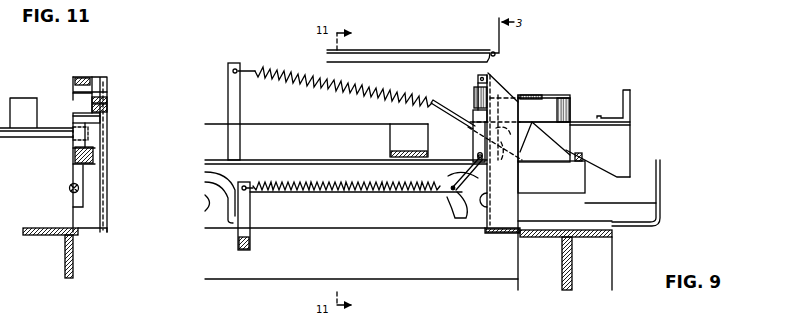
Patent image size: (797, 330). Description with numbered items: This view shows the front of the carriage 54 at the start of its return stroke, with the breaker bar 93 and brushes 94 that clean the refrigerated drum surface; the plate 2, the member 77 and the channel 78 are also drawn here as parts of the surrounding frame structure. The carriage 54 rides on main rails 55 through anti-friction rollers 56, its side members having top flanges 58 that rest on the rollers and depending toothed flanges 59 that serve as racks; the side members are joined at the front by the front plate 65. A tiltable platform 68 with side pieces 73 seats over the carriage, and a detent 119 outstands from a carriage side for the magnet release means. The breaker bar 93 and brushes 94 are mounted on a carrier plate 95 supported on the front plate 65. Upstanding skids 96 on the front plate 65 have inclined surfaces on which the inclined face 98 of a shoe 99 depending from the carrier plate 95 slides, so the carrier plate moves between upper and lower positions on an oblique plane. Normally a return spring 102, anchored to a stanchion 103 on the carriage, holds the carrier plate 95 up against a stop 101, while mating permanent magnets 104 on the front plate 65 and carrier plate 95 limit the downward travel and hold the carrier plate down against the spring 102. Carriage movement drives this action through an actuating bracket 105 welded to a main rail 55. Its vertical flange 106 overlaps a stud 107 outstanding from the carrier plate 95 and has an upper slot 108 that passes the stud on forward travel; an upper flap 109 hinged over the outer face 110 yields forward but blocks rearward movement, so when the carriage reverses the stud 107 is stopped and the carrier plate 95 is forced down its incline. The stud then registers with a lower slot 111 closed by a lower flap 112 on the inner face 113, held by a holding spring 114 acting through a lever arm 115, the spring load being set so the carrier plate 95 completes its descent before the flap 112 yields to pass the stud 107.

In FIG. 9, the top plate 2 is at (404, 62).
In FIG. 9, the carriage 54 is at (295, 194).
In FIG. 11, the main rails 55 is at (74, 252).
In FIG. 9, the main rails 55 is at (212, 281).
In FIG. 9, the anti-friction rollers 56 is at (452, 200).
In FIG. 9, the top flanges 58 is at (258, 160).
In FIG. 9, the vertical flanges 59 is at (290, 169).
In FIG. 9, the front plate 65 is at (549, 164).
In FIG. 9, the tiltable platform 68 is at (263, 121).
In FIG. 9, the side pieces 73 is at (338, 150).
In FIG. 9, the support post 77 is at (574, 270).
In FIG. 9, the channel 78 is at (660, 196).
In FIG. 9, the breaker bar 93 is at (632, 104).
In FIG. 9, the brushes 94 is at (553, 110).
In FIG. 9, the carrier plate 95 is at (585, 121).
In FIG. 9, the skids 96 is at (548, 147).
In FIG. 9, the inclined face 98 is at (600, 173).
In FIG. 9, the shoe 99 is at (632, 143).
In FIG. 9, the stops 101 is at (433, 100).
In FIG. 9, the return springs 102 is at (338, 90).
In FIG. 9, the stanchion 103 is at (228, 99).
In FIG. 9, the permanent magnets 104 is at (548, 95).
In FIG. 11, the actuating brackets 105 is at (97, 77).
In FIG. 9, the actuating brackets 105 is at (523, 198).
In FIG. 11, the vertical flange 106 is at (73, 77).
In FIG. 9, the vertical flange 106 is at (479, 75).
In FIG. 11, the stud 107 is at (72, 141).
In FIG. 9, the stud 107 is at (490, 127).
In FIG. 11, the upper slot 108 is at (73, 93).
In FIG. 11, the upper flap 109 is at (73, 99).
In FIG. 9, the upper flap 109 is at (474, 97).
In FIG. 11, the outer face 110 is at (80, 108).
In FIG. 9, the outer face 110 is at (497, 92).
In FIG. 11, the lower slot 111 is at (96, 146).
In FIG. 11, the lower flap 112 is at (73, 150).
In FIG. 9, the lower flap 112 is at (476, 130).
In FIG. 9, the inner face 113 is at (494, 158).
In FIG. 11, the holding spring 114 is at (70, 192).
In FIG. 9, the holding spring 114 is at (313, 186).
In FIG. 11, the lever arm 115 is at (73, 175).
In FIG. 9, the lever arm 115 is at (455, 181).
In FIG. 9, the detents 119 is at (420, 140).